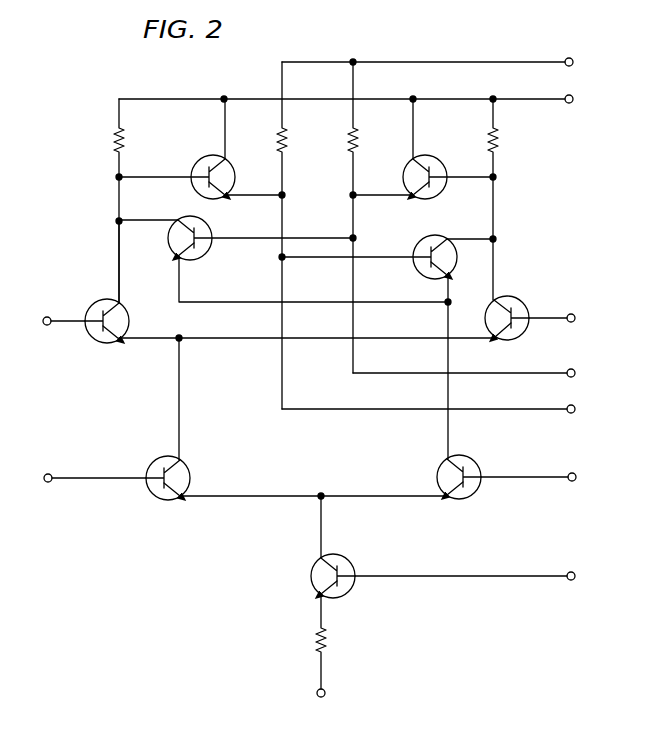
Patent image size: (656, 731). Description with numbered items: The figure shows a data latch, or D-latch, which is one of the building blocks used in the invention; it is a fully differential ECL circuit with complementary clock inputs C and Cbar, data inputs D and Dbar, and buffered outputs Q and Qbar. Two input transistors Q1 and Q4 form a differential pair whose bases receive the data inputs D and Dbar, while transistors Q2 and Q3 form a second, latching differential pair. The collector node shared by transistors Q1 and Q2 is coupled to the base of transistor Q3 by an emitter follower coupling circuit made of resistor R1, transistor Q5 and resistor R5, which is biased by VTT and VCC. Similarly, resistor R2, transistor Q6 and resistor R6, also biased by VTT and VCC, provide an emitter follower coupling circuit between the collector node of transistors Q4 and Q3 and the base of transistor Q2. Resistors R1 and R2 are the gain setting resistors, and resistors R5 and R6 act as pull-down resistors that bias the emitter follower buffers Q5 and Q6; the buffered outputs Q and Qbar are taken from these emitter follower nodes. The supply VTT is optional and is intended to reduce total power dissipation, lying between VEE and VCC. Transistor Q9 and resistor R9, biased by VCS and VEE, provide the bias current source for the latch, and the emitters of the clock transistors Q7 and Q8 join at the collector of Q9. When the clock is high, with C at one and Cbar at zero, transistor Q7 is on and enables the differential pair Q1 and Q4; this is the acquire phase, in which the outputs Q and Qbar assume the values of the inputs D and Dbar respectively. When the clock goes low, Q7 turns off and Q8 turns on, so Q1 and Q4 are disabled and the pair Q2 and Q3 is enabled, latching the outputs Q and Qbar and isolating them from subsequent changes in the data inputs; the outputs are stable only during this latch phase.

The transistor Q1 is at (290, 282).
The transistor Q2 is at (283, 259).
The transistor Q3 is at (387, 338).
The transistor Q4 is at (498, 315).
The emitter follower buffer Q5 is at (200, 149).
The emitter follower buffer Q6 is at (423, 149).
The transistor Q7 is at (296, 419).
The transistor Q8 is at (449, 473).
The transistor Q9 is at (322, 547).
The gain setting resistor R1 is at (108, 201).
The gain setting resistor R2 is at (504, 199).
The pull-down resistor R5 is at (269, 235).
The pull-down resistor R6 is at (363, 217).
The resistor R9 is at (334, 641).
The optional supply VTT is at (445, 63).
The supply VCC is at (363, 100).
The bias supply VCS is at (482, 577).
The supply VEE is at (339, 694).
The data input D is at (58, 322).
The complementary data input Dbar is at (591, 309).
The clock input C is at (89, 479).
The complementary clock input Cbar is at (592, 464).
The buffered output Q is at (471, 374).
The complementary buffered output Qbar is at (591, 397).